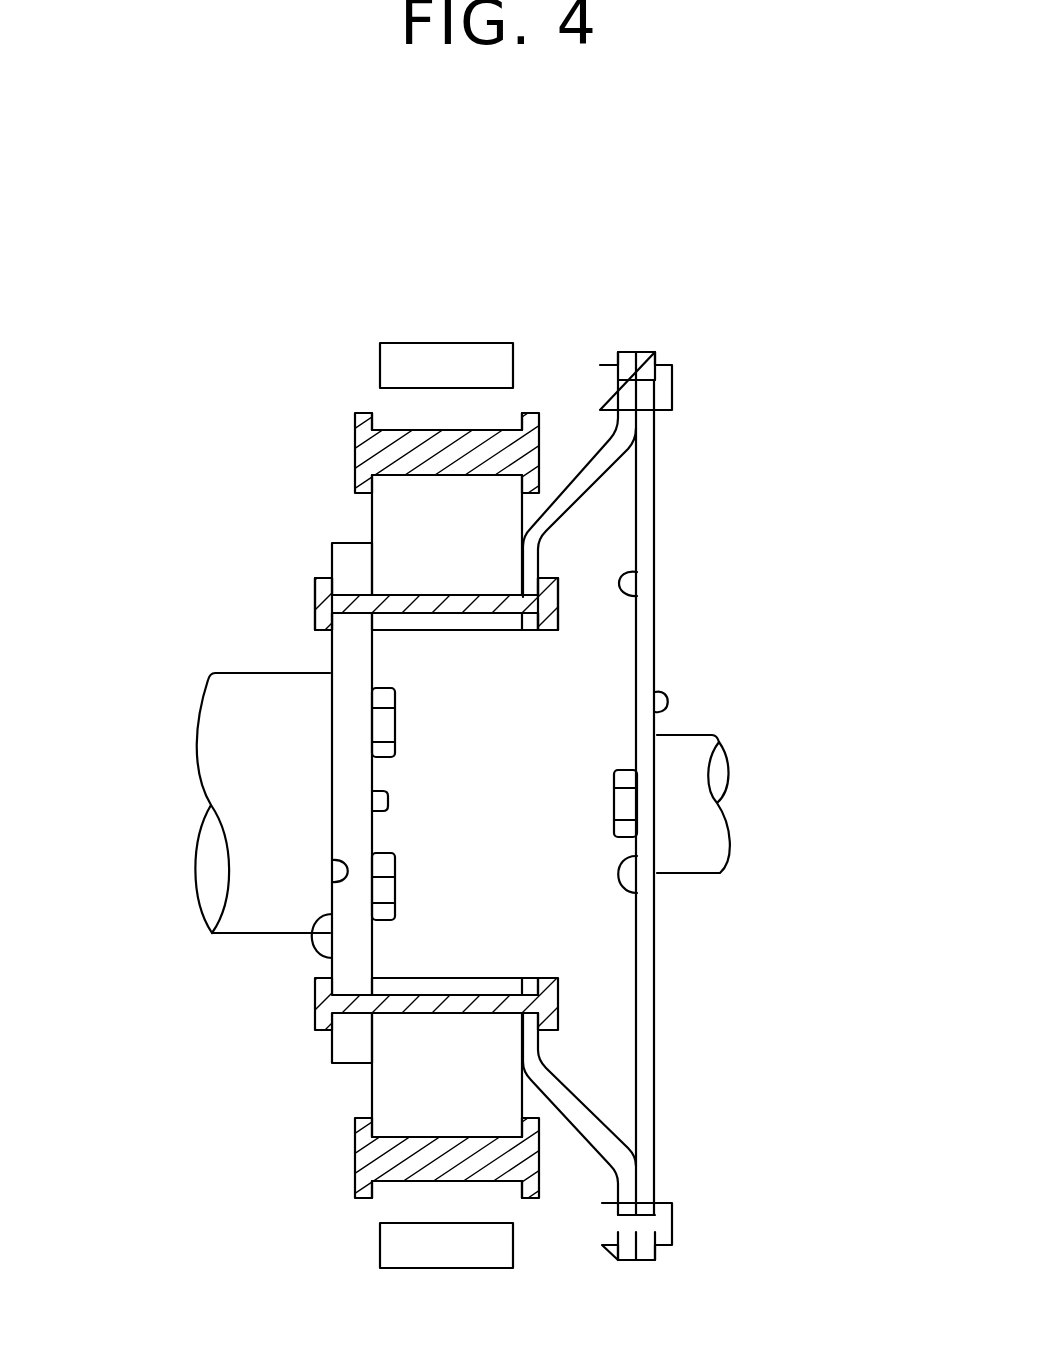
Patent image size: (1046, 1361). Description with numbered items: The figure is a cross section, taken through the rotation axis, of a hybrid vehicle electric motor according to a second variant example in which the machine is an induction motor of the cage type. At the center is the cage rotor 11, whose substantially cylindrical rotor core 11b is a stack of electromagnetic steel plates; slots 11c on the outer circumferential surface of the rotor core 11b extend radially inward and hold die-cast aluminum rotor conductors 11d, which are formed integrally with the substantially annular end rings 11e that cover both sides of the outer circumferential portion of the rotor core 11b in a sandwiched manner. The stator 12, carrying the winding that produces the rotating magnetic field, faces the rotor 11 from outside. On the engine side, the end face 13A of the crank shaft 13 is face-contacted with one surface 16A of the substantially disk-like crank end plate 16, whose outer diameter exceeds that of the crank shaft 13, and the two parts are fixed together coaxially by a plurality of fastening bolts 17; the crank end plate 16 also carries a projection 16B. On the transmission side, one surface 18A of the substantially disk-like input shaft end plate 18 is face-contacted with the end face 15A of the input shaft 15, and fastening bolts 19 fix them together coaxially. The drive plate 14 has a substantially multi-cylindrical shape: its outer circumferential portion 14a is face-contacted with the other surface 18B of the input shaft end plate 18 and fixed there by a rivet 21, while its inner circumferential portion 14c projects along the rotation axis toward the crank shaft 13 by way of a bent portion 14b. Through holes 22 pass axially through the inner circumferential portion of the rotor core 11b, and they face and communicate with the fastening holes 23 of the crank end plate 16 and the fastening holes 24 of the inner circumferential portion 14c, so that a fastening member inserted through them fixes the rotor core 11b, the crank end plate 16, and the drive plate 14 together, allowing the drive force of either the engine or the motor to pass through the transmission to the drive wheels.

The rotor 11 is at (172, 300).
The rotor core 11b is at (372, 515).
The slot 11c is at (456, 470).
The rotor conductor 11d is at (438, 726).
The end ring 11e is at (358, 436).
The stator 12 is at (400, 343).
The crank shaft 13 is at (209, 854).
The end face 13A is at (332, 882).
The drive plate 14 is at (653, 736).
The outer circumferential portion 14a is at (624, 352).
The bent portion 14b is at (587, 483).
The inner circumferential portion 14c is at (537, 562).
The input shaft 15 is at (732, 860).
The end face 15A is at (657, 897).
The crank end plate 16 is at (347, 655).
The one surface 16A is at (332, 960).
The projection 16B is at (362, 786).
The fastening bolt 17 is at (395, 743).
The input shaft end plate 18 is at (682, 797).
The one surface 18A is at (637, 706).
The other surface 18B is at (657, 572).
The fastening bolt 19 is at (618, 806).
The rivet 21 is at (672, 390).
The through hole 22 is at (432, 804).
The fastening hole 23 is at (388, 602).
The fastening hole 24 is at (545, 605).